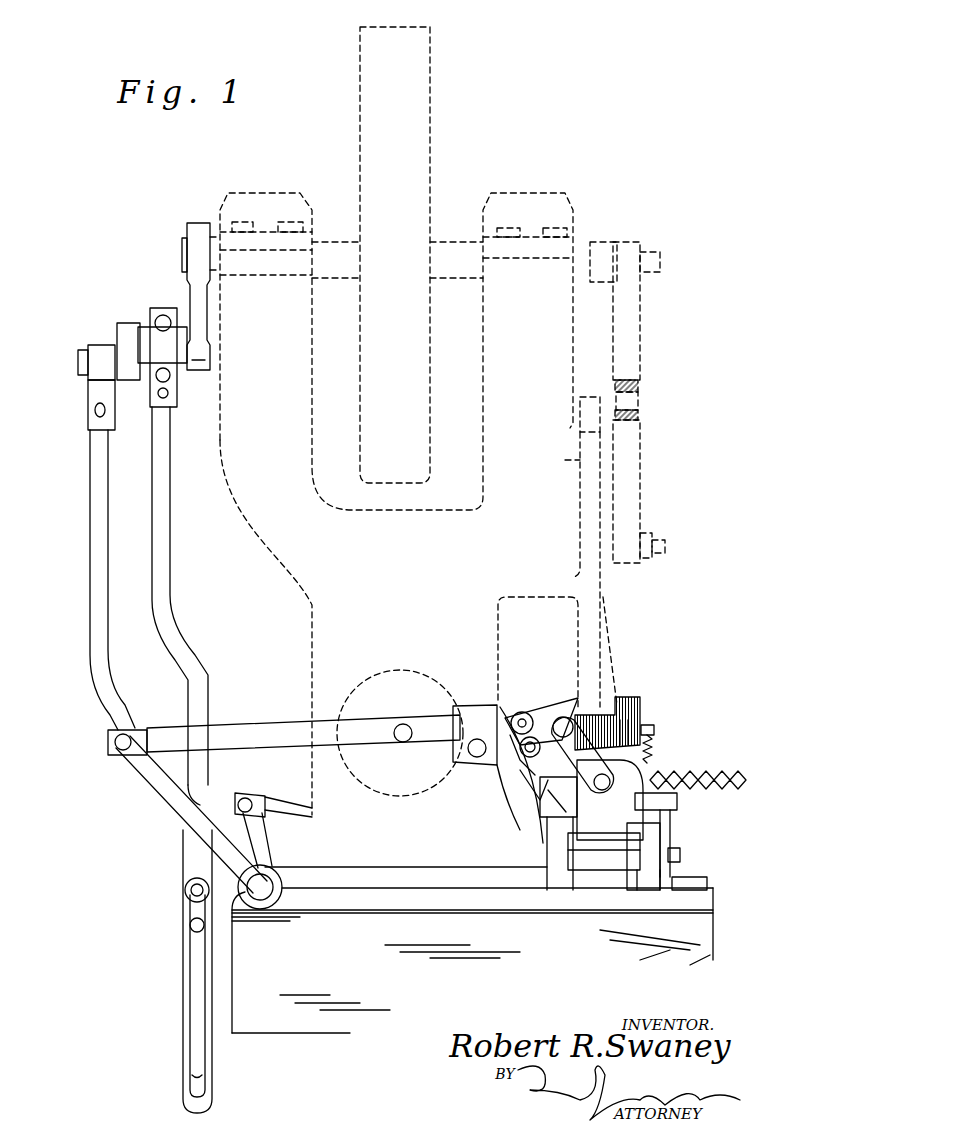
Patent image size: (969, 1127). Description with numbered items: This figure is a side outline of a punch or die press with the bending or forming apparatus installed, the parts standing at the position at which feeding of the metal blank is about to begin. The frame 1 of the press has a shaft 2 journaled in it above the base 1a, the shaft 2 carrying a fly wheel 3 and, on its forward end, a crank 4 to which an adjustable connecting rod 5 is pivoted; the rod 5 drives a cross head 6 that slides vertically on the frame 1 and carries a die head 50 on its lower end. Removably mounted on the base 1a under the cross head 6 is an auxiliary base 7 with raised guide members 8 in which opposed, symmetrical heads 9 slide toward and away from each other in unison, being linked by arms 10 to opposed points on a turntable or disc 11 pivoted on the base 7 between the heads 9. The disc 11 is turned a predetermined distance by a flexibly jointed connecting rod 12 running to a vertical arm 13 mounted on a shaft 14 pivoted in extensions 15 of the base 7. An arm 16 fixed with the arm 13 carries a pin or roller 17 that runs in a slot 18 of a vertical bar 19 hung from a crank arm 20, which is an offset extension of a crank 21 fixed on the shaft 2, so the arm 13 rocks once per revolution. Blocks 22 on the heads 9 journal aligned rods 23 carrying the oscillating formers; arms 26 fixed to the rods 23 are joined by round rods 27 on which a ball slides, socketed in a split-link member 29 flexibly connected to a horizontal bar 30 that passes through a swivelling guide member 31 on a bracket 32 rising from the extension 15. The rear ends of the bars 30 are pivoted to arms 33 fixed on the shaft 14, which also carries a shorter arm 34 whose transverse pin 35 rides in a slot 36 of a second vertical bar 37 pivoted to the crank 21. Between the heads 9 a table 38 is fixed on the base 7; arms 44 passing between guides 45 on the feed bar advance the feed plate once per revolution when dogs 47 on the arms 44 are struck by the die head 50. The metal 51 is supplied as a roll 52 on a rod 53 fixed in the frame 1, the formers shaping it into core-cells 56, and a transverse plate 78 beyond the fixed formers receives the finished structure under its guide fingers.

The frame 1 is at (318, 598).
The base 1a is at (513, 905).
The shaft 2 is at (455, 237).
The fly wheel 3 is at (398, 456).
The crank 4 is at (597, 243).
The connecting rod 5 is at (632, 468).
The cross head 6 is at (590, 625).
The auxiliary base 7 is at (645, 880).
The guide members 8 is at (655, 833).
The heads 9 is at (592, 827).
The arms 10 is at (640, 845).
The turntable or disc 11 is at (600, 850).
The connecting rod 12 is at (278, 800).
The vertical arm 13 is at (262, 845).
The shaft 14 is at (260, 890).
The extensions 15 is at (325, 875).
The arm 16 is at (227, 883).
The pin or roller 17 is at (197, 890).
The slot 18 is at (192, 1092).
The vertical bar 19 is at (95, 580).
The crank arm 20 is at (130, 350).
The crank 21 is at (198, 290).
The blocks 22 is at (663, 783).
The rods 23 is at (600, 782).
The arms 26 is at (580, 747).
The round rods 27 is at (547, 712).
The split-link member 29 is at (537, 728).
The horizontal lever or bar 30 is at (232, 738).
The guide member 31 is at (473, 720).
The bracket 32 is at (465, 828).
The arms 33 is at (162, 782).
The shorter arm 34 is at (218, 928).
The transverse pin 35 is at (190, 925).
The slot 36 is at (197, 1075).
The vertical bar 37 is at (160, 583).
The table 38 is at (663, 803).
The arms 44 is at (540, 765).
The guides 45 is at (540, 785).
The dogs 47 is at (545, 710).
The die head 50 is at (603, 737).
The metal 51 is at (540, 762).
The roll 52 is at (398, 672).
The rod 53 is at (403, 727).
The core-cell 56 is at (700, 783).
The transverse plate 78 is at (650, 780).